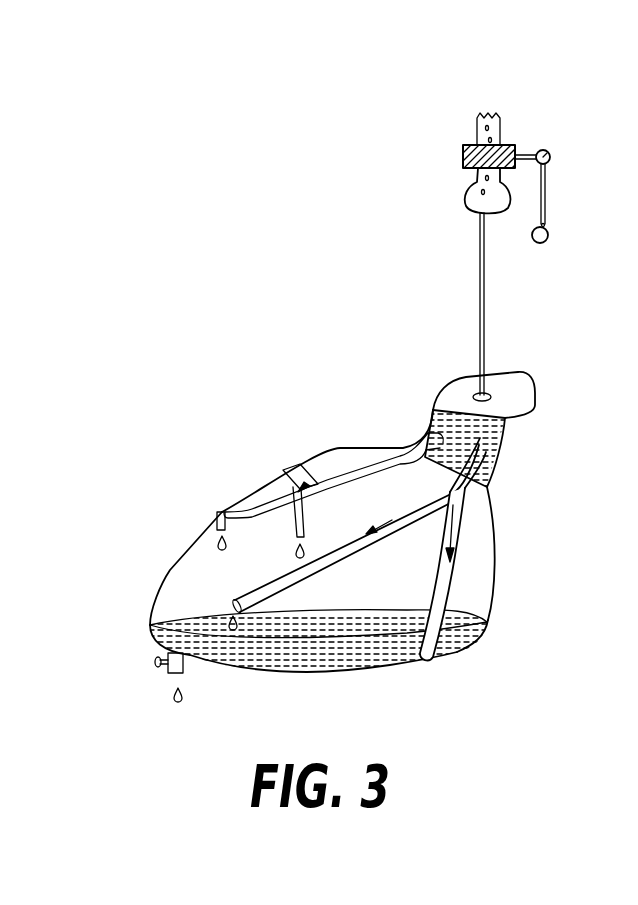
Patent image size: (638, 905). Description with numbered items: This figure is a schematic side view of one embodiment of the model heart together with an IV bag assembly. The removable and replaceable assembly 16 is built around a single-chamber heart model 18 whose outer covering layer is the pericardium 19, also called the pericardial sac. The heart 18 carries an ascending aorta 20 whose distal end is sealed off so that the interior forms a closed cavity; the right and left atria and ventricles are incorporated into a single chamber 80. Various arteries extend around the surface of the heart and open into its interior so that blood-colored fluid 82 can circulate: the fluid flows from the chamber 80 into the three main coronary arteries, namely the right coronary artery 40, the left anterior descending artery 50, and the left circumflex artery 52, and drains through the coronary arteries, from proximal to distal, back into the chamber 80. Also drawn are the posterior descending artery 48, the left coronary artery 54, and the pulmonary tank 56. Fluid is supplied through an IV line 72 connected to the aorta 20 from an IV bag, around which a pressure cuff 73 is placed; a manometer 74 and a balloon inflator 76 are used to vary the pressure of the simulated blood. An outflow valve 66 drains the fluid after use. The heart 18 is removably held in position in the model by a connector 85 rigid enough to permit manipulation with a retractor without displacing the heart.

The assembly 16 is at (115, 533).
The heart model 18 is at (163, 592).
The pericardium 19 is at (198, 543).
The aorta 20 is at (510, 390).
The right coronary artery 40 is at (355, 468).
The posterior descending artery 48 is at (303, 468).
The left anterior descending artery 50 is at (347, 548).
The left circumflex artery 52 is at (455, 530).
The left coronary artery 54 is at (497, 470).
The pulmonary tank 56 is at (523, 453).
The outflow valve 66 is at (163, 657).
The IV line 72 is at (485, 268).
The pressure cuff 73 is at (463, 155).
The manometer 74 is at (550, 158).
The balloon inflator 76 is at (548, 237).
The single chamber 80 is at (478, 557).
The blood-colored fluid 82 is at (482, 615).
The connector 85 is at (490, 597).